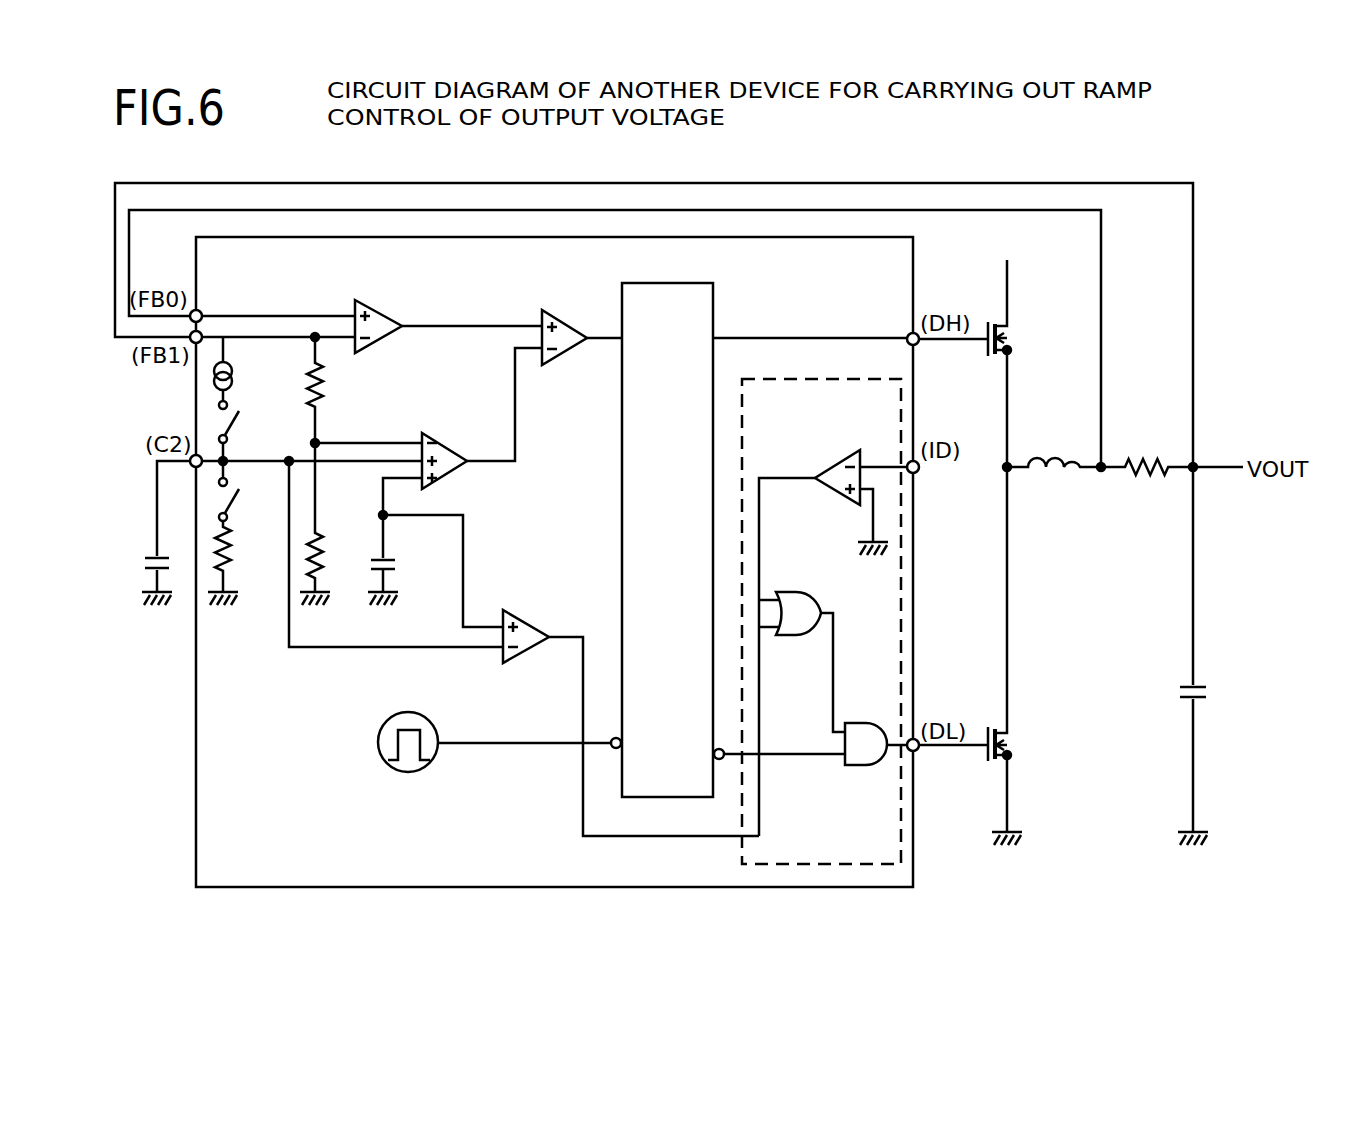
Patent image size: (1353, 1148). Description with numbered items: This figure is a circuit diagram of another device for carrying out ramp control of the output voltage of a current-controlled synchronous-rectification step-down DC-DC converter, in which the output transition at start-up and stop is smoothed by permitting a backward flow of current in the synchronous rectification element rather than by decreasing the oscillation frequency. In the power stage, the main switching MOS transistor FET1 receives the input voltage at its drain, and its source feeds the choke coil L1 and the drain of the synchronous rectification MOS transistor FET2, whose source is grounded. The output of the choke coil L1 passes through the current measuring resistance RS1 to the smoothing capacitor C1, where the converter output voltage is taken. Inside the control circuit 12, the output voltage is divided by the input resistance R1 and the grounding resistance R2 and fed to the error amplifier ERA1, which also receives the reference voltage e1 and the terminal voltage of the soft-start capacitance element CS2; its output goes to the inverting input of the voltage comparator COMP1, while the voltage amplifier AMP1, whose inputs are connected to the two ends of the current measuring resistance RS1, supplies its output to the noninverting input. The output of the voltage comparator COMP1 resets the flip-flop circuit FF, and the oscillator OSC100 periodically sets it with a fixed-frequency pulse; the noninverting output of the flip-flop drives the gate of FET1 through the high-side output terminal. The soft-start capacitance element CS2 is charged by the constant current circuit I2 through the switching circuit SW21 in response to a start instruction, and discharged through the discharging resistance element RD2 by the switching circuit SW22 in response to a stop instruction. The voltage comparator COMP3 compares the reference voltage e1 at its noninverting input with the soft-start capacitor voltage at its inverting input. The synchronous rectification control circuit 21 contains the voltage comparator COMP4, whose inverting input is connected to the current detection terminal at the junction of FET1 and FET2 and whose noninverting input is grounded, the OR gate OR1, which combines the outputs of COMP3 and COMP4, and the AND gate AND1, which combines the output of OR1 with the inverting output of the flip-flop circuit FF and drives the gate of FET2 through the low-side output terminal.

The control device / power supply control IC 12 is at (660, 237).
The synchronous rectification control circuit 21 is at (815, 658).
The voltage amplifier AMP1 is at (383, 304).
The error amplifier ERA1 is at (449, 436).
The voltage comparator COMP1 is at (569, 316).
The voltage comparator COMP3 is at (528, 616).
The voltage comparator COMP4 is at (826, 458).
The flip-flop circuit FF is at (665, 283).
The OR gate OR1 is at (812, 594).
The AND gate AND1 is at (858, 767).
The oscillator OSC100 is at (408, 712).
The MOS transistor FET1 is at (993, 351).
The MOS transistor FET2 is at (993, 656).
The choke coil L1 is at (1054, 448).
The current measuring resistance RS1 is at (1172, 452).
The smoothing capacitor C1 is at (1179, 656).
The soft-start capacitance element CS2 is at (261, 533).
The constant current circuit I2 is at (232, 373).
The switching circuit SW21 is at (256, 438).
The switching circuit SW22 is at (256, 496).
The discharging resistance element RD2 is at (243, 563).
The input resistance R1 is at (334, 388).
The grounding resistance R2 is at (330, 522).
The reference voltage e1 is at (435, 552).